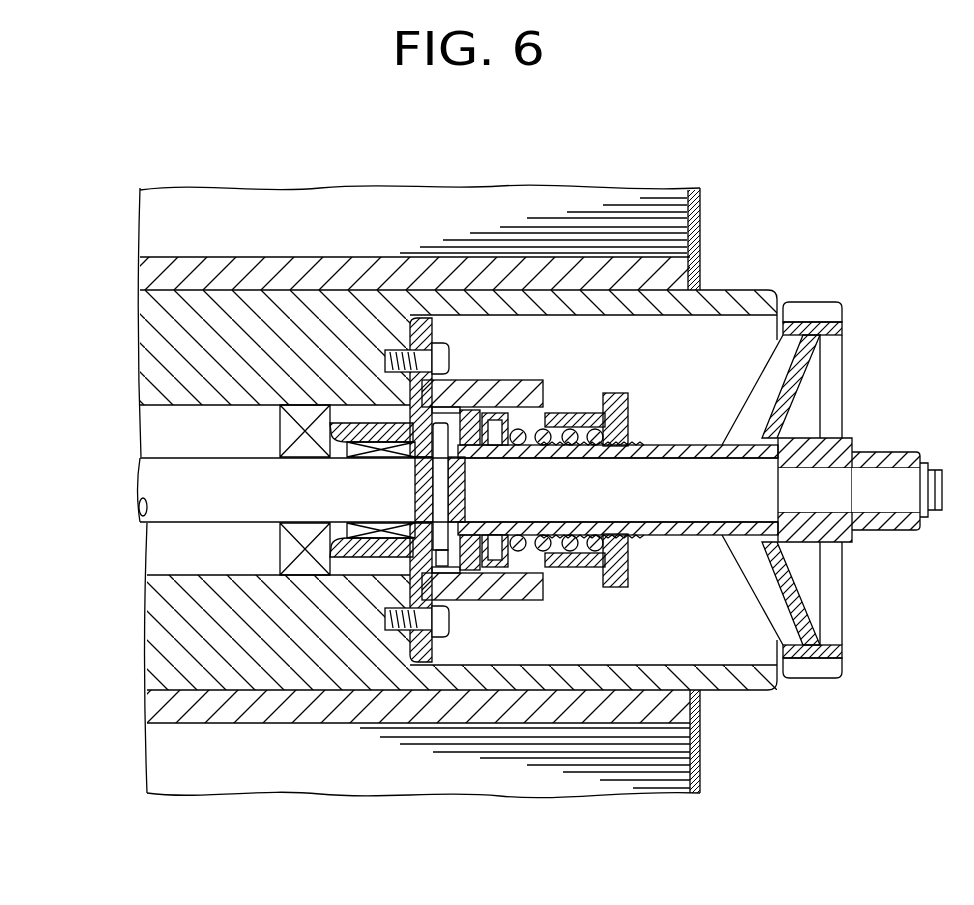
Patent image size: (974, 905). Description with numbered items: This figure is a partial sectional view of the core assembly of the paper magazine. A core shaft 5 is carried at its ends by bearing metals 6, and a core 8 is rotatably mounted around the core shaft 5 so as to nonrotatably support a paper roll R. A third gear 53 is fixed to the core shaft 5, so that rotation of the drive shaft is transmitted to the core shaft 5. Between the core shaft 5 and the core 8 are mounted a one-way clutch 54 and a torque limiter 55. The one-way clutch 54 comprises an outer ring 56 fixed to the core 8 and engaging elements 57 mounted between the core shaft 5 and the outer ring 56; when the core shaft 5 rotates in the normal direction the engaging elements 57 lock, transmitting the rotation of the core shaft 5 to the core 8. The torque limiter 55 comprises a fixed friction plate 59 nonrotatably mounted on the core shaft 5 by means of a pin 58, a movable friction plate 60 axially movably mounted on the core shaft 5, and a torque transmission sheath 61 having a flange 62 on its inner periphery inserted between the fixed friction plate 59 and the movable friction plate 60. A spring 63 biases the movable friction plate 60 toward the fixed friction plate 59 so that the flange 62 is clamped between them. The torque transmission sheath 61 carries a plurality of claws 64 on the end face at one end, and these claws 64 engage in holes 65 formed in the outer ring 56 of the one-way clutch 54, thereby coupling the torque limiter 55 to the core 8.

The paper roll R is at (670, 203).
The core shaft 5 is at (752, 470).
The bearing metal 6 is at (888, 520).
The core 8 is at (738, 288).
The third gear 53 is at (815, 303).
The one-way clutch 54 is at (353, 417).
The torque limiter 55 is at (542, 368).
The outer ring 56 is at (352, 556).
The engaging elements 57 is at (382, 536).
The pin 58 is at (484, 600).
The fixed friction plate 59 is at (459, 440).
The movable friction plate 60 is at (498, 436).
The torque transmission sheath 61 is at (478, 415).
The flange 62 is at (541, 594).
The spring 63 is at (588, 556).
The claws 64 is at (408, 396).
The holes 65 is at (414, 350).